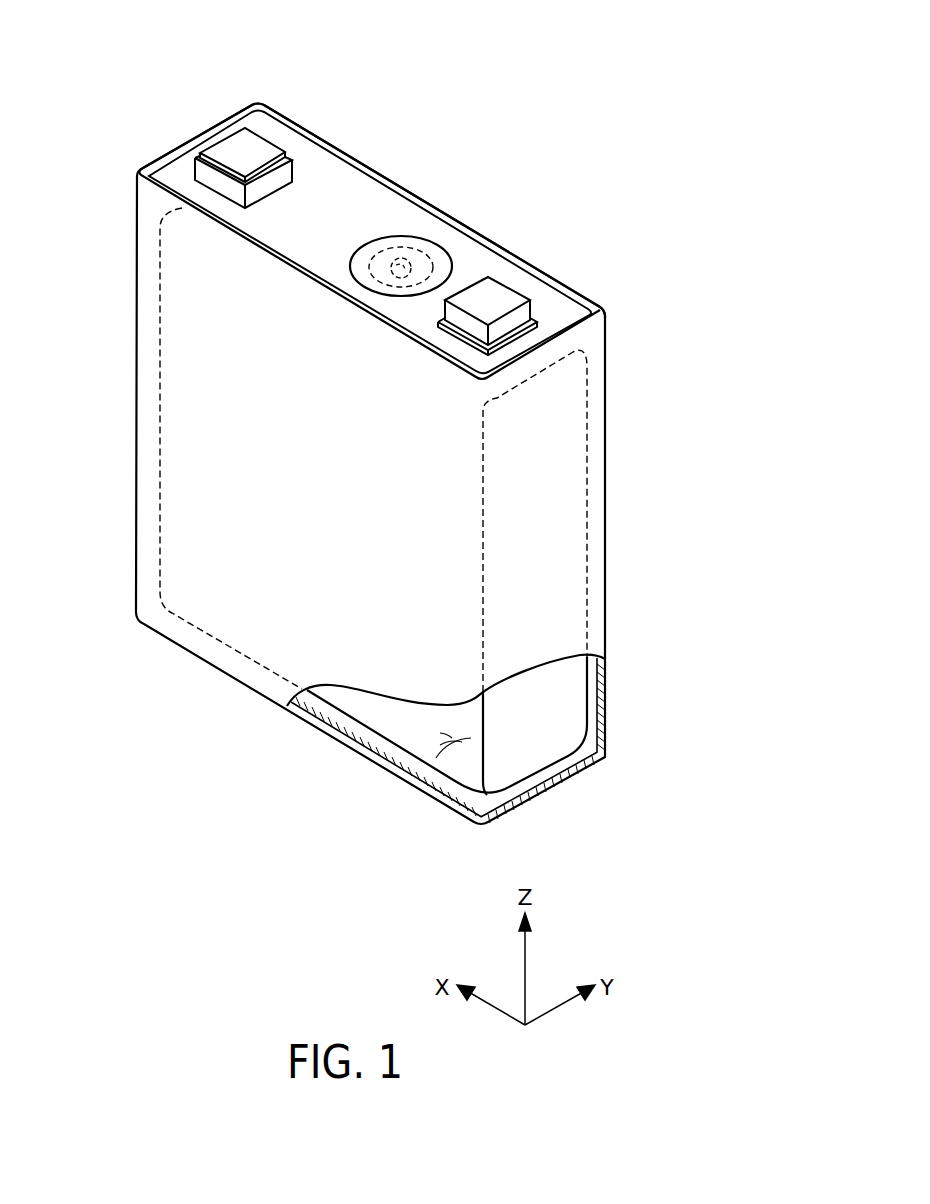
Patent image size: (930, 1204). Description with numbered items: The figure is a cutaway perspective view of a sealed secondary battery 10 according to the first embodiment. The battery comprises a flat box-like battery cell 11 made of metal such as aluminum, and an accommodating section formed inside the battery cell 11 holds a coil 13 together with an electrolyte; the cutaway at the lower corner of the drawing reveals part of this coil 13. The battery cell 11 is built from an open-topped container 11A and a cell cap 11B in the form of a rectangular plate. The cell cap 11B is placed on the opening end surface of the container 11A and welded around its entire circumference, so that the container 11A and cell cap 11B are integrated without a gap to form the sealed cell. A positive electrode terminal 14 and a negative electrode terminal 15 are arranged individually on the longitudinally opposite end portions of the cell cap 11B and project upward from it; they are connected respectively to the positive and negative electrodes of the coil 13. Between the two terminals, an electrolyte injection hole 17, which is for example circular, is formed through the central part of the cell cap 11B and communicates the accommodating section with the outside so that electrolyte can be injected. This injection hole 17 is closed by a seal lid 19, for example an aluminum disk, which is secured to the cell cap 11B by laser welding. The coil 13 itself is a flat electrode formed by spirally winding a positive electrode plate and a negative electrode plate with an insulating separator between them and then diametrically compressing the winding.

The sealed secondary battery 10 is at (318, 74).
The battery cell 11 is at (135, 366).
The container 11A is at (150, 506).
The cell cap 11B is at (467, 243).
The coil 13 is at (403, 742).
The positive electrode terminal 14 is at (233, 152).
The negative electrode terminal 15 is at (507, 295).
The electrolyte injection hole 17 is at (402, 257).
The seal lid 19 is at (388, 233).